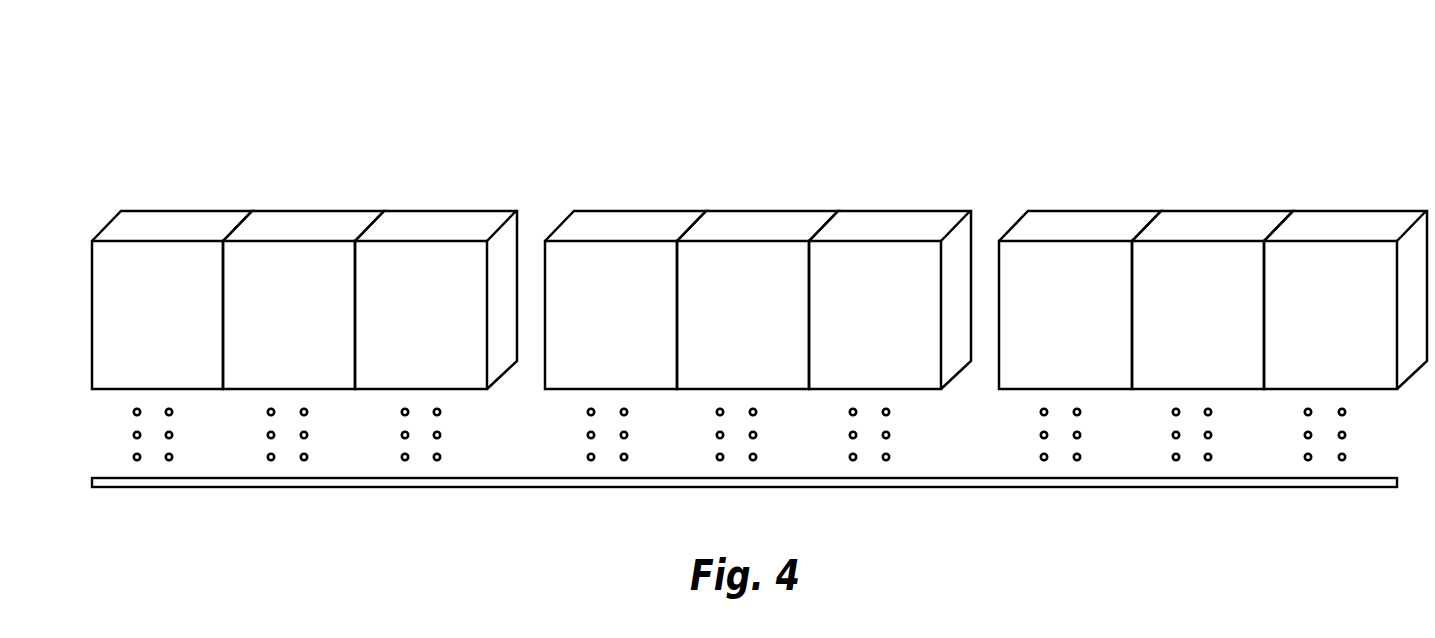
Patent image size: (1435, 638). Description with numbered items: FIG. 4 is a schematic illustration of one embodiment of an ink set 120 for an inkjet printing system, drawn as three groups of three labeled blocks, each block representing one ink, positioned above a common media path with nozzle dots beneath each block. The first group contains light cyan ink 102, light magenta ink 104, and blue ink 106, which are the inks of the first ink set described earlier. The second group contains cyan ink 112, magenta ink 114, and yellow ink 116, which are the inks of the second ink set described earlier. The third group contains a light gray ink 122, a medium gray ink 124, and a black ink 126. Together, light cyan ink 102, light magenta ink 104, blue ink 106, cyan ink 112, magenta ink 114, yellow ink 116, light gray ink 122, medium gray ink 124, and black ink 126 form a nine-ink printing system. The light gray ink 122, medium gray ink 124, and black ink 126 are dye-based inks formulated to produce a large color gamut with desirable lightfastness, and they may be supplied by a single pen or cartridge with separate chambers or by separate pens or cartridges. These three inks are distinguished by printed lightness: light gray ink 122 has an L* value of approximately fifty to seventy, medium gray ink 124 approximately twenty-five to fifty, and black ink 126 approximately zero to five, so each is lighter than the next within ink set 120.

The light cyan ink 102 is at (193, 212).
The light magenta ink 104 is at (315, 212).
The blue ink 106 is at (451, 212).
The cyan ink 112 is at (636, 212).
The magenta ink 114 is at (766, 212).
The yellow ink 116 is at (895, 212).
The light gray ink 122 is at (1101, 212).
The medium gray ink 124 is at (1223, 212).
The black ink 126 is at (1360, 212).
The ink set 120 is at (1226, 90).